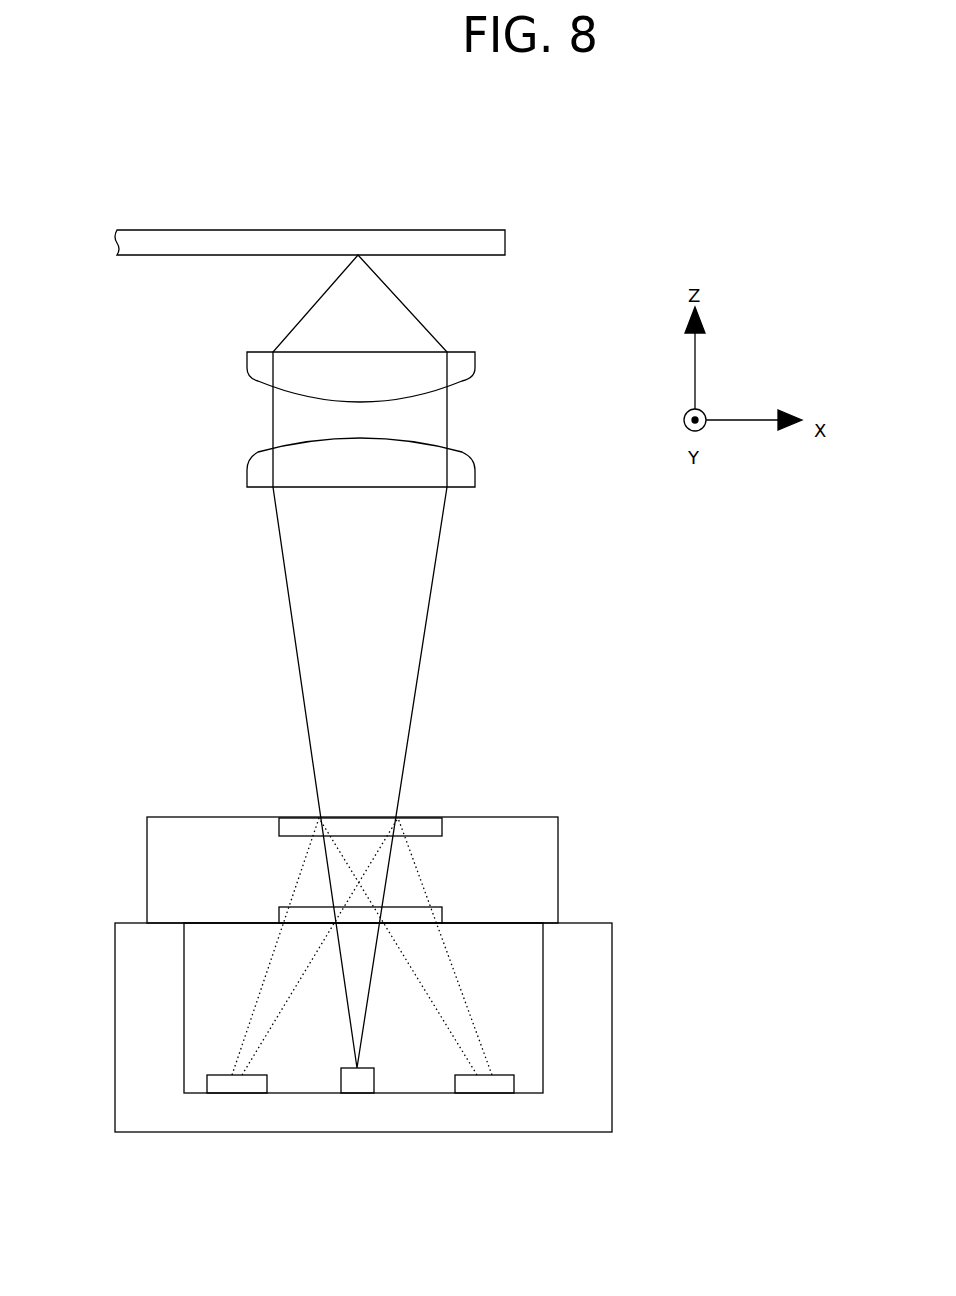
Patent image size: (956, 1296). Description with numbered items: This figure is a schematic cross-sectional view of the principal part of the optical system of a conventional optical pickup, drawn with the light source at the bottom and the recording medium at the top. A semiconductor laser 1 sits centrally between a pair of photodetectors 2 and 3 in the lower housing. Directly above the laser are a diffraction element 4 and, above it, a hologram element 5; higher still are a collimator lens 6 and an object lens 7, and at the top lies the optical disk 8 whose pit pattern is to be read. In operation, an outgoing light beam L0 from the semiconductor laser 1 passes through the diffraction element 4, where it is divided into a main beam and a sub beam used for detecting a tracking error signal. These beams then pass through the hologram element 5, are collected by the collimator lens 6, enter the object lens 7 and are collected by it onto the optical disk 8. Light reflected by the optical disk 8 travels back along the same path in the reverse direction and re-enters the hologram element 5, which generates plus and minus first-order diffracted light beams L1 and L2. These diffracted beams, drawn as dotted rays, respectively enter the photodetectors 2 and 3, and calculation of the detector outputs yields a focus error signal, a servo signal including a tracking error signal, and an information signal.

The semiconductor laser 1 is at (362, 1083).
The photodetector 2 is at (233, 1082).
The photodetector 3 is at (495, 1083).
The diffraction element 4 is at (425, 917).
The hologram element 5 is at (430, 825).
The collimator lens 6 is at (475, 487).
The object lens 7 is at (467, 370).
The optical disk 8 is at (465, 245).
The outgoing light beam L0 is at (355, 992).
The first-order diffracted light beam L1 is at (278, 980).
The first-order diffracted light beam L2 is at (447, 990).